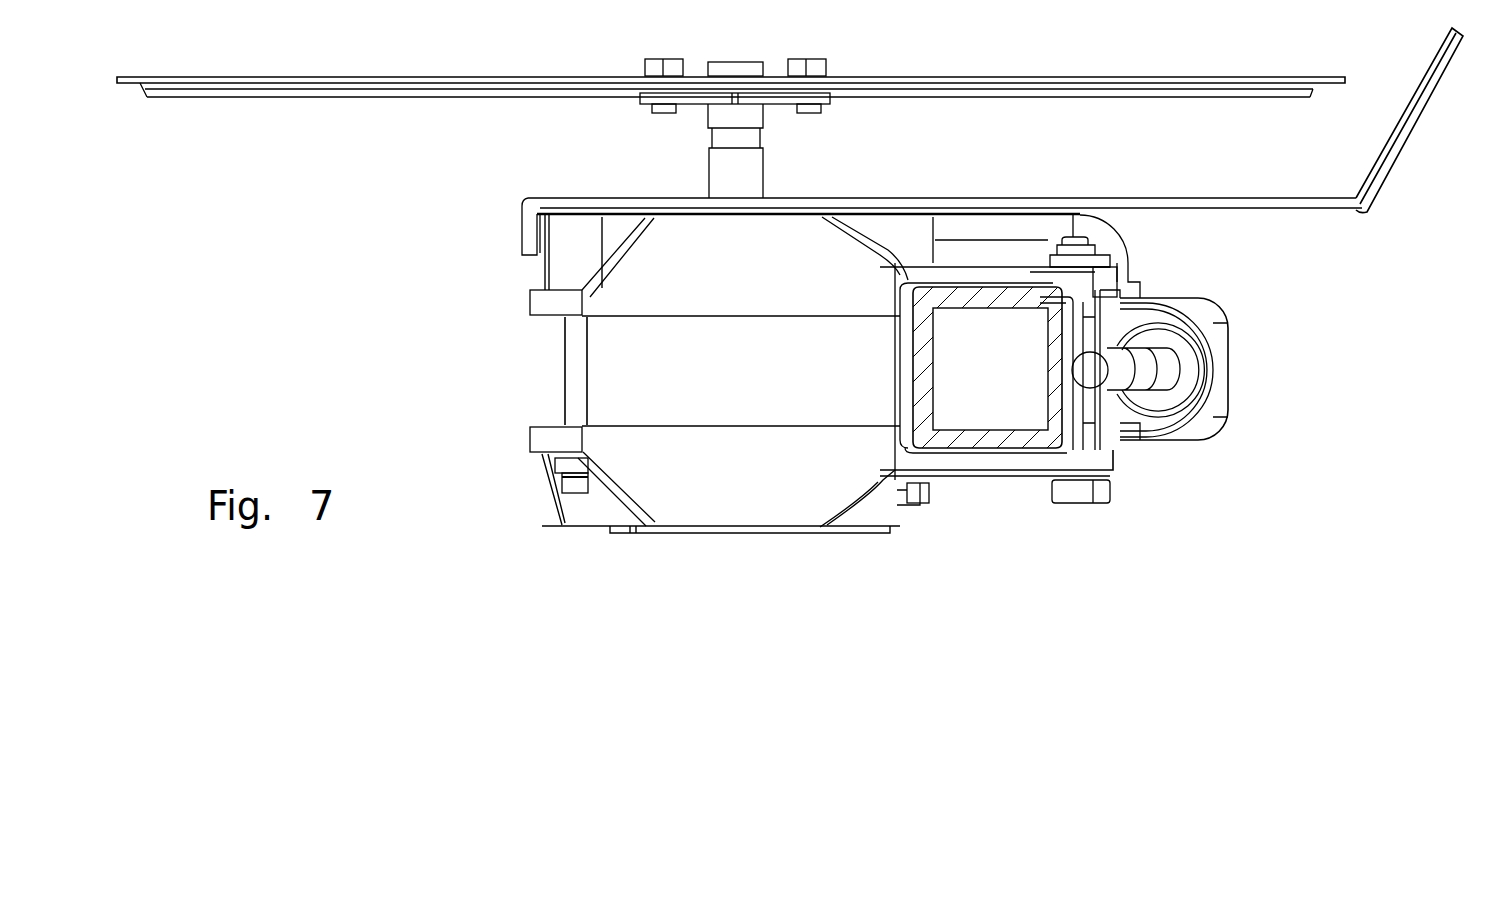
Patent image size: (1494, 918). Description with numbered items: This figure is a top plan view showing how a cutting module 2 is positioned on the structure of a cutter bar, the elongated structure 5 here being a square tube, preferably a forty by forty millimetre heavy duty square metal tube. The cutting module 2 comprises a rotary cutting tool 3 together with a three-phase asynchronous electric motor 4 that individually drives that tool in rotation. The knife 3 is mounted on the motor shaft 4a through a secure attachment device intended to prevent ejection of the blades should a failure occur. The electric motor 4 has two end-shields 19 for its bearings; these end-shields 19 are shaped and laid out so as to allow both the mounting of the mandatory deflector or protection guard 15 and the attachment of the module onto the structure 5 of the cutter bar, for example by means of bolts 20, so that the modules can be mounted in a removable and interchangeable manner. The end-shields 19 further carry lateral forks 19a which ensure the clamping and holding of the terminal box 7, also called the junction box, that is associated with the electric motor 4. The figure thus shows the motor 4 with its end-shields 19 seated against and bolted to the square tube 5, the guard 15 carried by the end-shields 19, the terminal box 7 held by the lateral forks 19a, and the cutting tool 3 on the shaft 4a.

The cutting module 2 is at (698, 558).
The rotary cutting tool 3 is at (1032, 278).
The three-phase asynchronous electric motor 4 is at (643, 390).
The motor shaft 4a is at (748, 165).
The elongated structure 5 is at (978, 440).
The terminal box 7 is at (1190, 380).
The deflector or protection guard 15 is at (1308, 215).
The end-shield 19 is at (672, 290).
The lateral fork 19a is at (1005, 70).
The bolt 20 is at (555, 372).